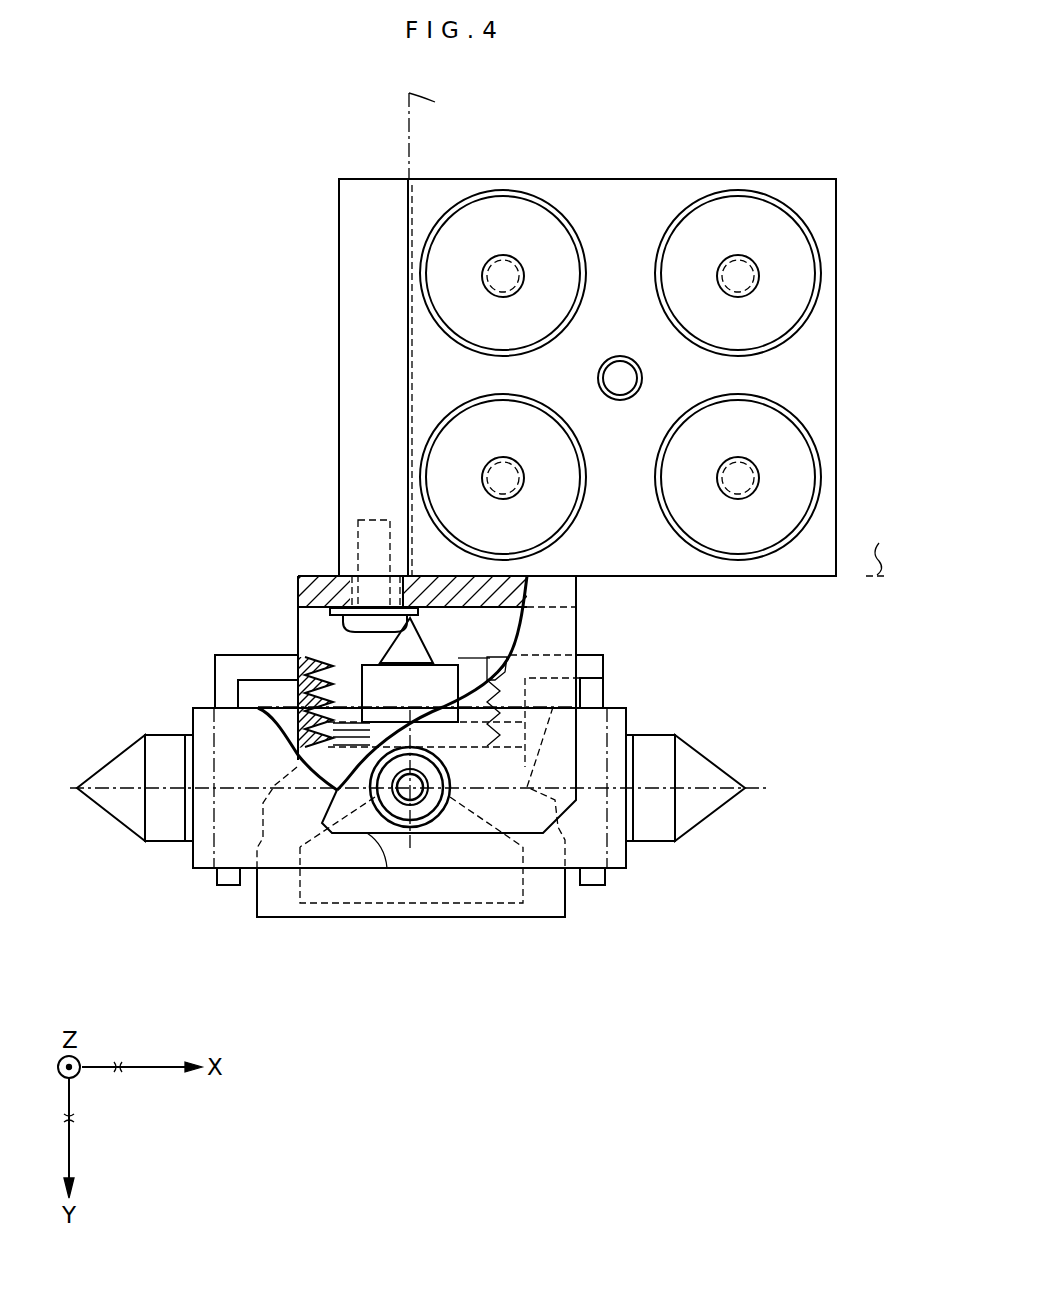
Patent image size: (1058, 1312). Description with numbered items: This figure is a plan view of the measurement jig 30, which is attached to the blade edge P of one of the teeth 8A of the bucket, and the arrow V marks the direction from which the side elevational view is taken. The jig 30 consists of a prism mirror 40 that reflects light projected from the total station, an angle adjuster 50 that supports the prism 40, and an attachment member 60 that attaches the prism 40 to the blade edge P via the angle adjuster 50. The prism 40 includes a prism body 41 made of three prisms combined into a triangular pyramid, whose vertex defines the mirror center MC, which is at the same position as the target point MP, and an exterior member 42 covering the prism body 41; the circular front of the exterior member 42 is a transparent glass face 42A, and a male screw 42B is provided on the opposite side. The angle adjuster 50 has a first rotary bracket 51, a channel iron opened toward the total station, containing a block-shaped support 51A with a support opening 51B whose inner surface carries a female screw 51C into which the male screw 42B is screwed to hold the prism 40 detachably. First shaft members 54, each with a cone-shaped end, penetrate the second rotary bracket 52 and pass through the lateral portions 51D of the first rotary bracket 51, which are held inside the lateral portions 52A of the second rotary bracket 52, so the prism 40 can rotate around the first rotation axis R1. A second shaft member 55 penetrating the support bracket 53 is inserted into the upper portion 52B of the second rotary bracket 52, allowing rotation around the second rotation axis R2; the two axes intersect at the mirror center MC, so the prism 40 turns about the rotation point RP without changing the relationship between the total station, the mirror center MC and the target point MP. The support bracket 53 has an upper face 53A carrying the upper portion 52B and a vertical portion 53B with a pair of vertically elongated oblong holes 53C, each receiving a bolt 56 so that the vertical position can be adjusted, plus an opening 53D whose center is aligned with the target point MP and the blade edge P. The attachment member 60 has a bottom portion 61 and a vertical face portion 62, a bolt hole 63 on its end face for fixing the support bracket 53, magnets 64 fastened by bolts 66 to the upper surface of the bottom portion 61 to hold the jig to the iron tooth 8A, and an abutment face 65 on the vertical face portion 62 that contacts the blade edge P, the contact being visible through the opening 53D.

The tooth 8A is at (420, 118).
The measurement jig 30 is at (158, 412).
The prism mirror 40 is at (335, 935).
The prism body 41 is at (425, 892).
The exterior member 42 is at (262, 897).
The glass face 42A is at (317, 920).
The male screw 42B is at (345, 740).
The angle adjuster 50 is at (192, 640).
The first rotary bracket 51 is at (223, 678).
The support 51A is at (297, 728).
The support opening 51B is at (460, 681).
The female screw 51C is at (487, 670).
The lateral portions 51D is at (223, 697).
The second rotary bracket 52 is at (202, 848).
The lateral portions 52A is at (190, 812).
The upper portion 52B is at (228, 848).
The support bracket 53 is at (558, 640).
The upper face 53A is at (487, 810).
The vertical portion 53B is at (328, 590).
The oblong holes 53C is at (373, 590).
The opening 53D is at (443, 597).
The first shaft members 54 is at (112, 777).
The second shaft member 55 is at (445, 773).
The bolt 56 is at (352, 735).
The attachment member 60 is at (350, 240).
The bottom portion 61 is at (821, 360).
The vertical face portion 62 is at (348, 345).
The bolt hole 63 is at (367, 520).
The magnets 64 is at (673, 270).
The abutment face 65 is at (408, 375).
The bolts 66 is at (502, 282).
The blade edge P is at (407, 410).
The arrow V is at (126, 498).
The first rotation axis R1 is at (753, 790).
The mirror center MC is at (450, 861).
The target point MP is at (450, 861).
The second rotation axis R2 is at (450, 861).
The rotation point RP is at (405, 797).